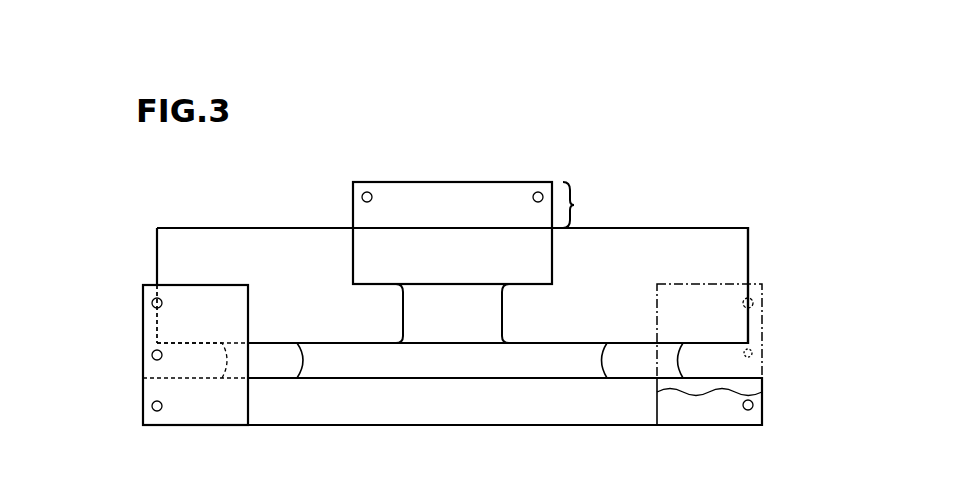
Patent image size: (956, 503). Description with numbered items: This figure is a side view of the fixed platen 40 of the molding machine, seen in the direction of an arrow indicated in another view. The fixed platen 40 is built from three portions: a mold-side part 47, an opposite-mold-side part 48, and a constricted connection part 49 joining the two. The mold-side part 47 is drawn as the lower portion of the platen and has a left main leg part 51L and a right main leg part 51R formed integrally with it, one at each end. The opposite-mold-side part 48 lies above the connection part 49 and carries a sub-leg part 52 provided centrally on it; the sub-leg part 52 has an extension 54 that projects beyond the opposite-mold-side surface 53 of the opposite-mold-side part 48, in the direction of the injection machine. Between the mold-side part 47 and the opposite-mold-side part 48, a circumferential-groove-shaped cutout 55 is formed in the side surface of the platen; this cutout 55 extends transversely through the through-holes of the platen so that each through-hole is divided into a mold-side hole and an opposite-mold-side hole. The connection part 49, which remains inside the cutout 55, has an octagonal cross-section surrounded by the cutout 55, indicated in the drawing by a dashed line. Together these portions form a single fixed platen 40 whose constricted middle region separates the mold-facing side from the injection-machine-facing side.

The fixed platen 40 is at (705, 197).
The mold-side part 47 is at (432, 408).
The opposite-mold-side part 48 is at (630, 258).
The connection part 49 is at (530, 362).
The left main leg part 51L is at (150, 364).
The right main leg part 51R is at (763, 325).
The sub-leg part 52 is at (443, 237).
The opposite-mold-side surface 53 is at (247, 228).
The extension 54 is at (572, 203).
The cutout 55 is at (723, 360).